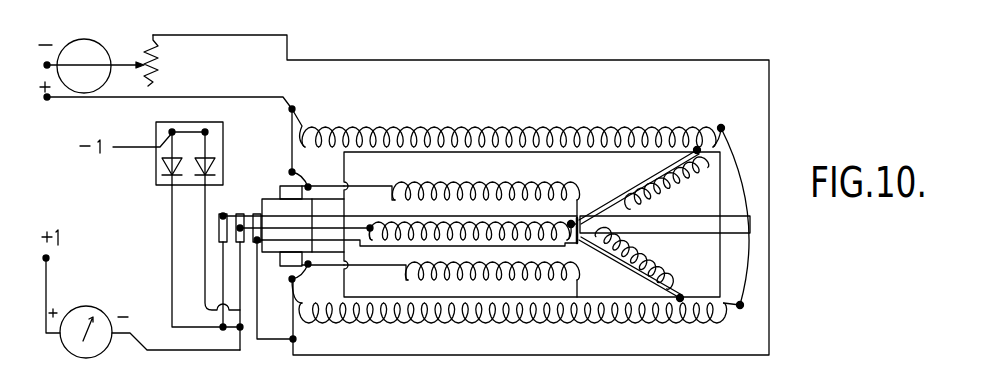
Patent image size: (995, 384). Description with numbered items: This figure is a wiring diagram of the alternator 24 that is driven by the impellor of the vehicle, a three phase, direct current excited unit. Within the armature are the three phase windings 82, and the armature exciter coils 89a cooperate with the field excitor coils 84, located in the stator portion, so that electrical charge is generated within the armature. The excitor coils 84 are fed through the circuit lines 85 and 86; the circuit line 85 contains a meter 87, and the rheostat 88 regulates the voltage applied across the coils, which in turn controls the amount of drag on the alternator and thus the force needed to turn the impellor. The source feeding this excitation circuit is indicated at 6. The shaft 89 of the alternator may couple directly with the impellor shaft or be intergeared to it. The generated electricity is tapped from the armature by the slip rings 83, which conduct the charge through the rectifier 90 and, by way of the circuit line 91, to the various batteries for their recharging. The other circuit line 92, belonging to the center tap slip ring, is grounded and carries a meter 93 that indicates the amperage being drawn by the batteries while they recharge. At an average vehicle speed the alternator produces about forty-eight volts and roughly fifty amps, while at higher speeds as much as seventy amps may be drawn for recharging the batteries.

The battery 6 is at (47, 66).
The alternator 24 is at (745, 268).
The three phase windings 82 is at (624, 202).
The slip rings 83 is at (237, 214).
The field excitor coils 84 is at (480, 130).
The circuit line 85 is at (387, 60).
The circuit line 86 is at (231, 97).
The meter 87 is at (94, 56).
The rheostat 88 is at (151, 76).
The shaft 89 is at (666, 216).
The armature exciter coils 89a is at (482, 182).
The rectifier 90 is at (224, 133).
The circuit line 91 is at (131, 148).
The circuit line 92 is at (133, 339).
The meter 93 is at (80, 308).